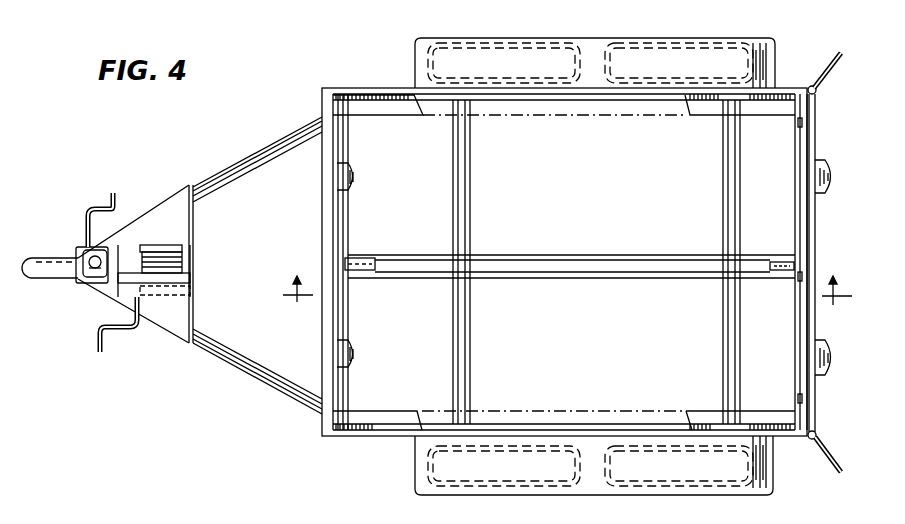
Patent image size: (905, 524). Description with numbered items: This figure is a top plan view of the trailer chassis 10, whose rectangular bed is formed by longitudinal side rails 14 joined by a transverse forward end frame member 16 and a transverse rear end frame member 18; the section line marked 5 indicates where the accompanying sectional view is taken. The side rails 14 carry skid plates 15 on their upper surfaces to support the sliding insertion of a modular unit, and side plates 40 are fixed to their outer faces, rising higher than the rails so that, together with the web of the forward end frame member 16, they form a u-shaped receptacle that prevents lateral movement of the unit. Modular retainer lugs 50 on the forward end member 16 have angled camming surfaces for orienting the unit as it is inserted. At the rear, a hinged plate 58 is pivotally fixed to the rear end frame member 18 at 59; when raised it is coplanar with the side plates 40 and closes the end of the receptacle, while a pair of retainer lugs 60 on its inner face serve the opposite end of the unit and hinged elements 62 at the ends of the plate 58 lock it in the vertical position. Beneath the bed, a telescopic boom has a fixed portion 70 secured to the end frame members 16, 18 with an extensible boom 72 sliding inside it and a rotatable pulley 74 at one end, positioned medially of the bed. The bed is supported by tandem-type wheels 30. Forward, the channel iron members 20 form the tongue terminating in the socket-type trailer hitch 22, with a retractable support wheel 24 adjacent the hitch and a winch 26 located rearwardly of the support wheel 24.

The trailer 10 is at (347, 64).
The side plates 40 is at (383, 88).
The transverse forward end frame member 16 is at (349, 236).
The transverse rear end frame member 18 is at (796, 222).
The longitudinal side rails 14 is at (556, 104).
The skid plates 15 is at (409, 108).
The fixed portion of telescopic boom 70 is at (536, 256).
The extensible boom 72 is at (610, 256).
The rotatable pulley 74 is at (786, 262).
The modular retainer lugs 50 is at (352, 352).
The pivot of hinged plate 59 is at (798, 124).
The hinged plate 58 is at (816, 226).
The hinged elements 62 is at (838, 57).
The retainer lugs 60 is at (828, 162).
The tandem-type wheels 30 is at (520, 38).
The channel iron members 20 is at (229, 172).
The trailer hitch 22 is at (40, 257).
The retractable support wheel 24 is at (80, 283).
The winch 26 is at (158, 246).
The section line 5- 5 is at (567, 300).